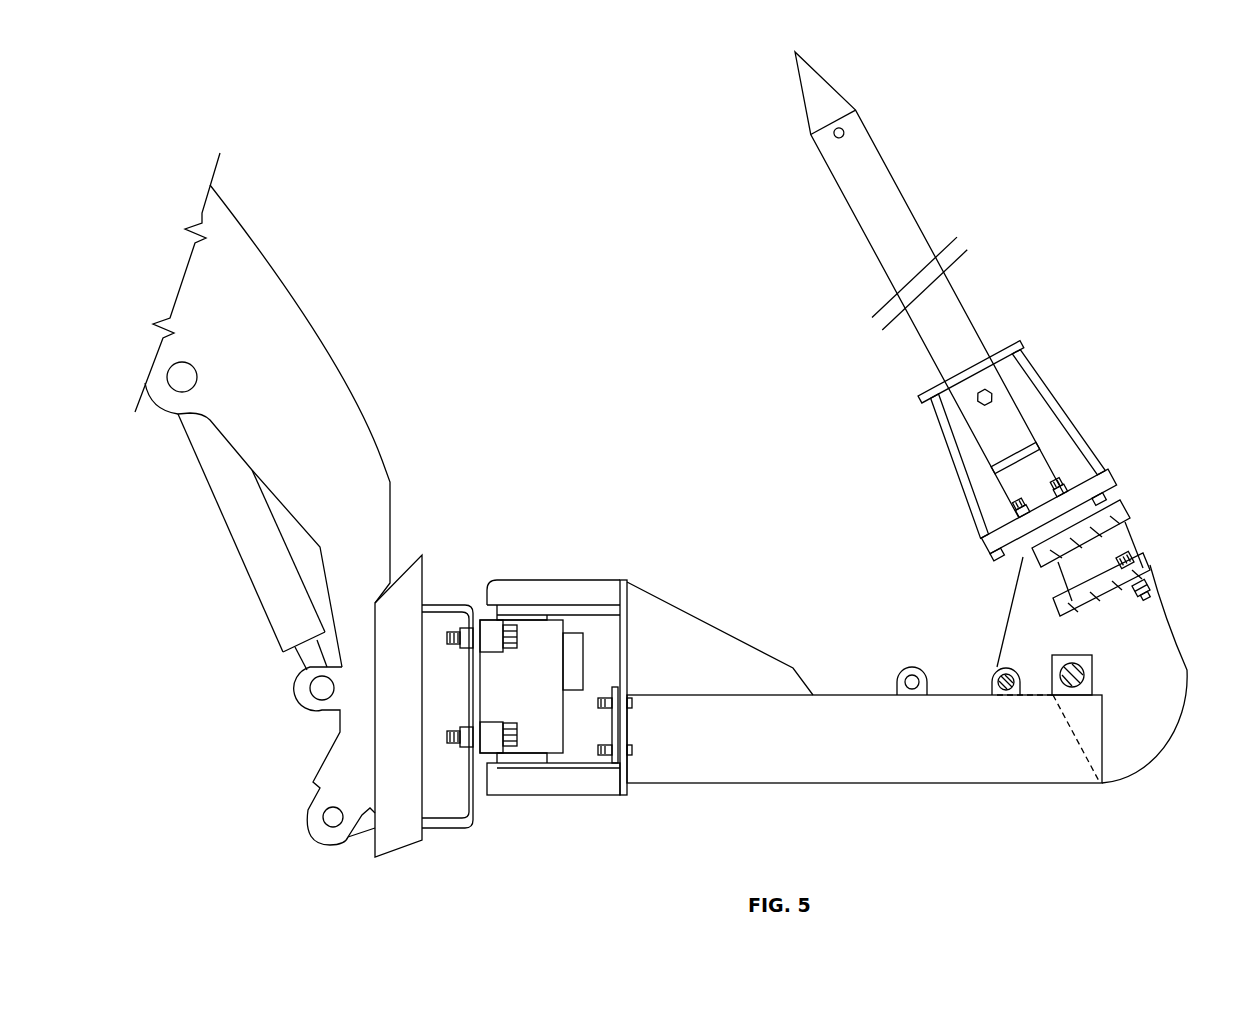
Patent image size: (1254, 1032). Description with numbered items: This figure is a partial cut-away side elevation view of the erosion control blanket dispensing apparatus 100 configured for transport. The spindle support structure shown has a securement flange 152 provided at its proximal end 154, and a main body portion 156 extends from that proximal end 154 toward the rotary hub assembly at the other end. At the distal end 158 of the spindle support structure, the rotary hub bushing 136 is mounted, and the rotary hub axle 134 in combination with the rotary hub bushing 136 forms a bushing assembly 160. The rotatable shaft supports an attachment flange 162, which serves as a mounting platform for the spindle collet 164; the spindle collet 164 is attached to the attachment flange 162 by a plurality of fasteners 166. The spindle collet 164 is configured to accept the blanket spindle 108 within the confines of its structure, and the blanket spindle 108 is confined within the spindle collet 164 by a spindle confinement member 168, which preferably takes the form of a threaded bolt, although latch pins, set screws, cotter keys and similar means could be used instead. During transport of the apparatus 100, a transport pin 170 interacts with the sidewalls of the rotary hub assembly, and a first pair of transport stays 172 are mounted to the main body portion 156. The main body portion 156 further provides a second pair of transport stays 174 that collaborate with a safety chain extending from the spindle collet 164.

The erosion control blanket dispensing apparatus 100 is at (987, 55).
The blanket spindle 108 is at (872, 158).
The rotary hub axle 134 is at (1067, 657).
The rotary hub bushing 136 is at (1092, 682).
The securement flange 152 is at (632, 632).
The proximal end 154 is at (635, 800).
The main body portion 156 is at (825, 800).
The distal end 158 is at (1061, 797).
The bushing assembly 160 is at (1108, 642).
The attachment flange 162 is at (1112, 490).
The spindle collet 164 is at (1074, 398).
The fasteners 166 is at (1060, 488).
The spindle confinement member 168 is at (987, 390).
The transport pin 170 is at (998, 678).
The first pair of transport stays 172 is at (1026, 696).
The second pair of transport stays 174 is at (915, 667).